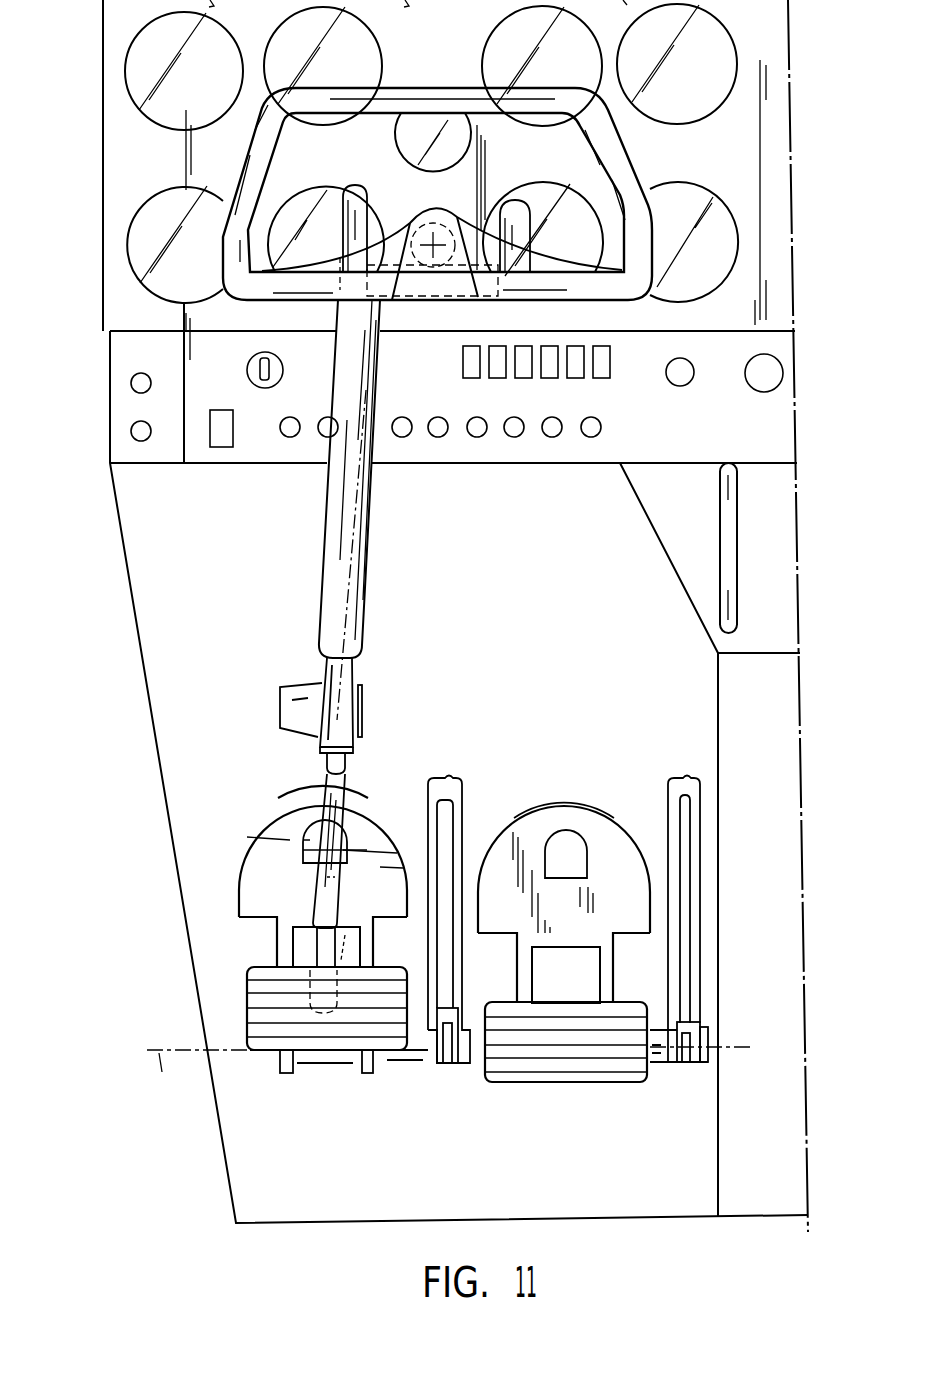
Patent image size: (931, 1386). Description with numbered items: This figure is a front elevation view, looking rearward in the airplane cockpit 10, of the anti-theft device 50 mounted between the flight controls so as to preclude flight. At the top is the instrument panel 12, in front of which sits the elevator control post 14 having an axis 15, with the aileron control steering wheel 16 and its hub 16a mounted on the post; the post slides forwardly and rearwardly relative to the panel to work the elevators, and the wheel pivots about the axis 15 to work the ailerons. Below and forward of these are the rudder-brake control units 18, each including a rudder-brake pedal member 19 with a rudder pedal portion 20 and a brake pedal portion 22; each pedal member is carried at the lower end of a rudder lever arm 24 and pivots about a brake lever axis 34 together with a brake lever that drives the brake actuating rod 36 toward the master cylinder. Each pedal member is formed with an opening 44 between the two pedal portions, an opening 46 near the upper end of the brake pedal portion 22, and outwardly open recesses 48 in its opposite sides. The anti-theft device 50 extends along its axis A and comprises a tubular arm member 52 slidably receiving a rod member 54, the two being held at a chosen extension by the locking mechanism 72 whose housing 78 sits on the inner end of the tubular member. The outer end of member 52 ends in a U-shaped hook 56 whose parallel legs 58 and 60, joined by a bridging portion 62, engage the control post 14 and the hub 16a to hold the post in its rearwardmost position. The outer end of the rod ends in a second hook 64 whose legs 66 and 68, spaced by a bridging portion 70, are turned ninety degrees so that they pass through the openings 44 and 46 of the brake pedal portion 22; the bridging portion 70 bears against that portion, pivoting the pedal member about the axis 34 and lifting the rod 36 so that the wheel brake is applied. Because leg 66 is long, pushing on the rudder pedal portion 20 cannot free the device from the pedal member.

The airplane cockpit 10 is at (105, 567).
The instrument panel 12 is at (752, 45).
The elevator control post 14 is at (420, 227).
The axis 15 is at (436, 243).
The aileron control steering wheel 16 is at (636, 161).
The hub 16a is at (420, 292).
The rudder-brake control unit 18 is at (268, 752).
The rudder-brake pedal member 19 is at (240, 1009).
The rudder pedal portion 20 is at (278, 1052).
The brake pedal portion 22 is at (275, 810).
The rudder lever arm 24 is at (454, 781).
The brake lever axis 34 is at (755, 1022).
The brake actuating rod 36 is at (443, 987).
The opening 44 is at (296, 945).
The opening 46 is at (307, 838).
The recess 48 is at (277, 925).
The anti-theft device 50 is at (407, 527).
The arm member 52 is at (324, 489).
The rod member 54 is at (355, 768).
The U-shaped hook 56 is at (510, 193).
The leg 58 is at (348, 217).
The leg 60 is at (522, 222).
The bridging portion 62 is at (480, 292).
The U-shaped hook 64 is at (312, 958).
The leg 66 is at (334, 946).
The leg 68 is at (303, 850).
The bridging portion 70 is at (312, 890).
The locking mechanism 72 is at (284, 672).
The housing 78 is at (345, 672).
The axis A is at (348, 587).